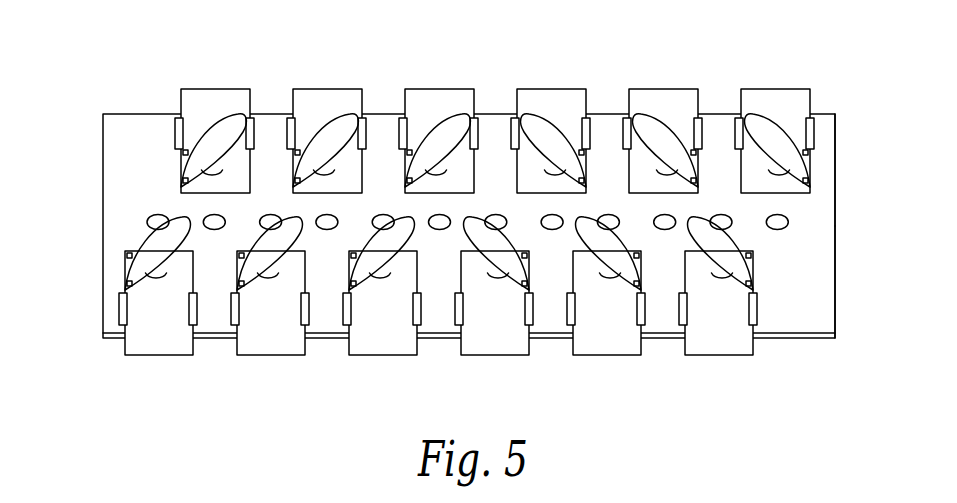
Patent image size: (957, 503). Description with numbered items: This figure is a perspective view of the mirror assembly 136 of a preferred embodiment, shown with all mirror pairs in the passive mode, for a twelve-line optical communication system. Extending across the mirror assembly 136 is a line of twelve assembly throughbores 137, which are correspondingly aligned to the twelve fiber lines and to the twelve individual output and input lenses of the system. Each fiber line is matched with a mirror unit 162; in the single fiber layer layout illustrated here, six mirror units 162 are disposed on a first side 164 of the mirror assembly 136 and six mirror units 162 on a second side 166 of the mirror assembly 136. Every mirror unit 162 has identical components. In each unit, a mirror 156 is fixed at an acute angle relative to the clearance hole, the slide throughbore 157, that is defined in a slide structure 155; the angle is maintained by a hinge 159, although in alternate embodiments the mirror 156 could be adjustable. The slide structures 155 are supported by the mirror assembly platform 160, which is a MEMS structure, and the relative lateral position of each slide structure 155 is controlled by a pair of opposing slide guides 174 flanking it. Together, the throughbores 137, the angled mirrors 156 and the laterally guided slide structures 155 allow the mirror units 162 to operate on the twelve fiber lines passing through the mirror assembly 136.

The mirror assembly 136 is at (473, 246).
The assembly throughbores 137 is at (160, 225).
The slide structure 155 is at (212, 97).
The mirror 156 is at (203, 152).
The slide throughbore 157 is at (217, 178).
The hinge 159 is at (180, 168).
The mirror assembly platform 160 is at (497, 226).
The mirror unit 162 is at (434, 215).
The first side 164 is at (837, 170).
The second side 166 is at (837, 300).
The slide guides 174 is at (175, 135).